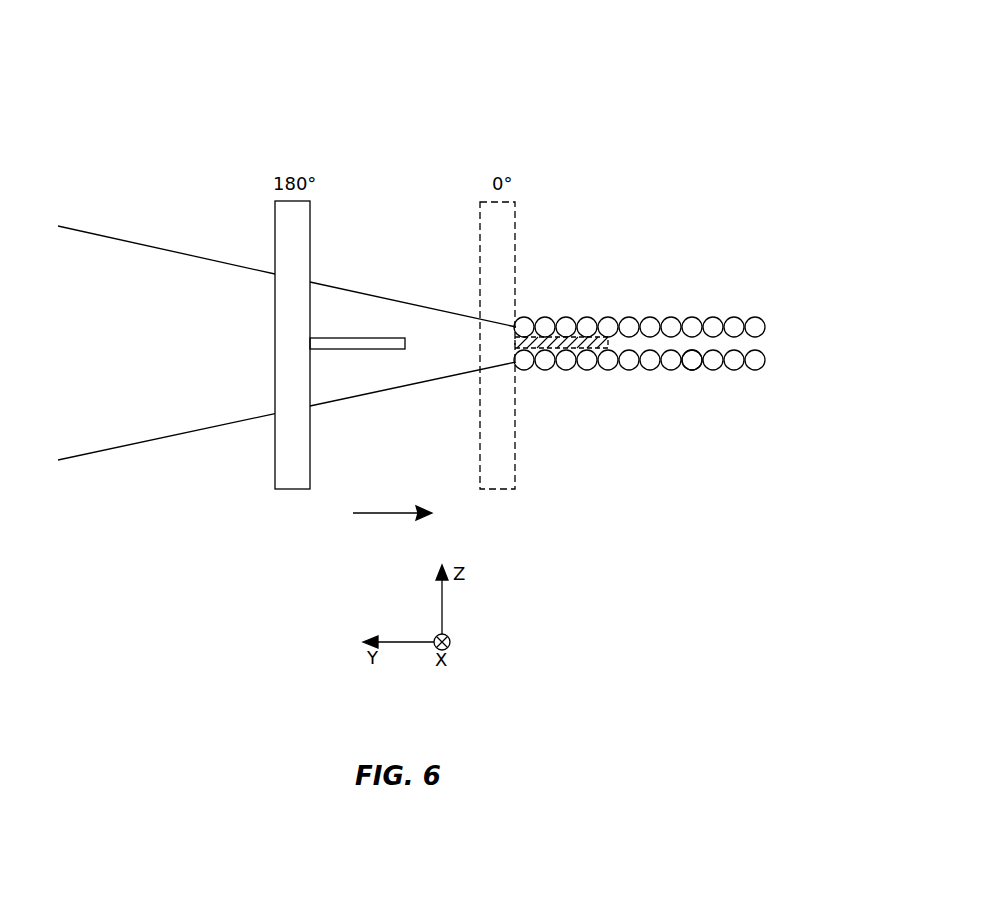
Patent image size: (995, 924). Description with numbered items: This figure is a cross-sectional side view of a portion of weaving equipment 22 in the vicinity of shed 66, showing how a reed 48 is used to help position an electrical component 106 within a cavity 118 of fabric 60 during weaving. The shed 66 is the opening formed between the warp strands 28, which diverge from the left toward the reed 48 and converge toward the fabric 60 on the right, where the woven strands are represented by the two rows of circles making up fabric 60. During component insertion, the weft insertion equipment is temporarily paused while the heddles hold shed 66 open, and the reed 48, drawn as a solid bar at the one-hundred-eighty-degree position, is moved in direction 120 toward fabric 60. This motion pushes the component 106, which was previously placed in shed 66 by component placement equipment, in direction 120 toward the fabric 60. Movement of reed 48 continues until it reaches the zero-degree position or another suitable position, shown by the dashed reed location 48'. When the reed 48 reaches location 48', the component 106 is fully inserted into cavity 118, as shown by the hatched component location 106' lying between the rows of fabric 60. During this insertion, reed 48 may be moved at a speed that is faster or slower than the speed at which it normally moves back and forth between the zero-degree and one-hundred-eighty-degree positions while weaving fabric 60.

The weaving equipment 22 is at (583, 76).
The light rays 28 is at (147, 248).
The reed 48 is at (323, 345).
The reed location 48' is at (530, 345).
The shed 66 is at (376, 314).
The component 106 is at (357, 365).
The component location 106' is at (582, 377).
The fabric 60 is at (762, 300).
The cavity 118 is at (690, 347).
The direction 120 is at (378, 512).